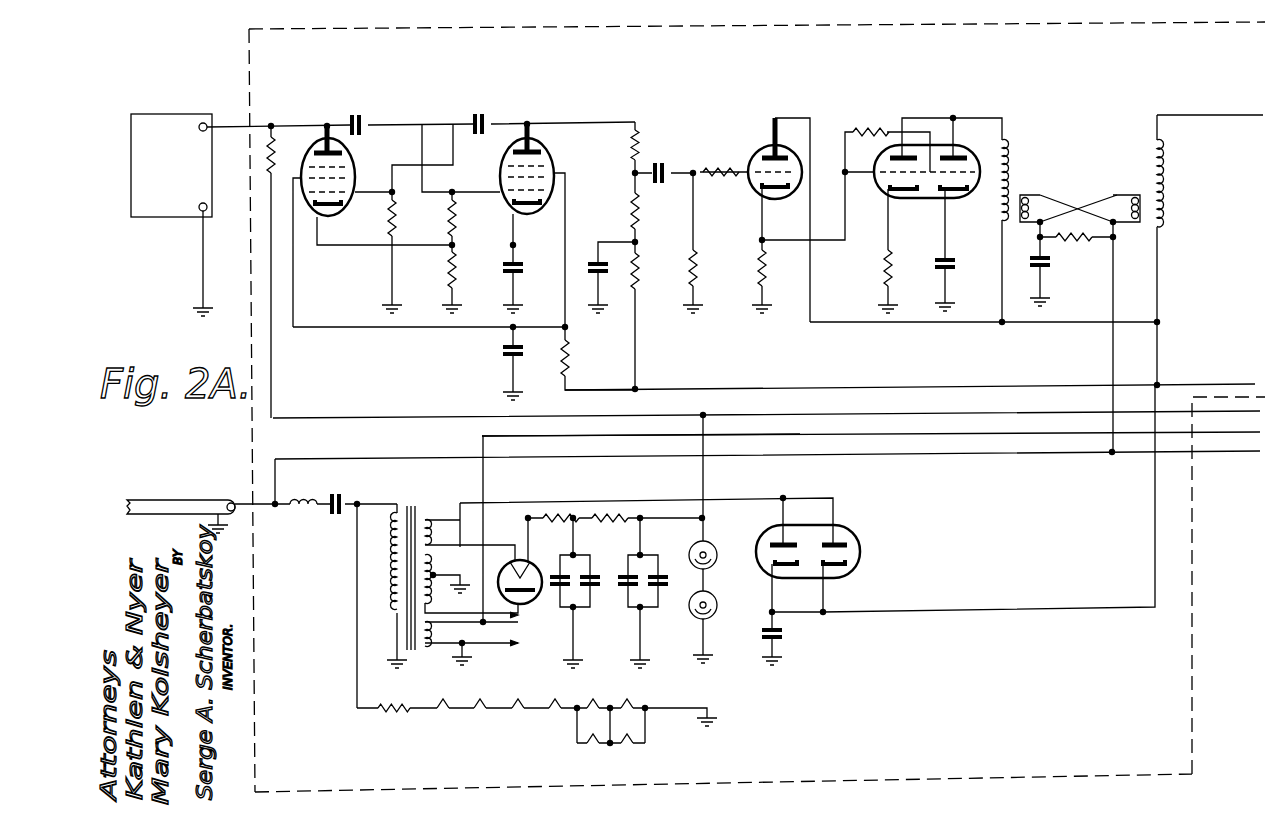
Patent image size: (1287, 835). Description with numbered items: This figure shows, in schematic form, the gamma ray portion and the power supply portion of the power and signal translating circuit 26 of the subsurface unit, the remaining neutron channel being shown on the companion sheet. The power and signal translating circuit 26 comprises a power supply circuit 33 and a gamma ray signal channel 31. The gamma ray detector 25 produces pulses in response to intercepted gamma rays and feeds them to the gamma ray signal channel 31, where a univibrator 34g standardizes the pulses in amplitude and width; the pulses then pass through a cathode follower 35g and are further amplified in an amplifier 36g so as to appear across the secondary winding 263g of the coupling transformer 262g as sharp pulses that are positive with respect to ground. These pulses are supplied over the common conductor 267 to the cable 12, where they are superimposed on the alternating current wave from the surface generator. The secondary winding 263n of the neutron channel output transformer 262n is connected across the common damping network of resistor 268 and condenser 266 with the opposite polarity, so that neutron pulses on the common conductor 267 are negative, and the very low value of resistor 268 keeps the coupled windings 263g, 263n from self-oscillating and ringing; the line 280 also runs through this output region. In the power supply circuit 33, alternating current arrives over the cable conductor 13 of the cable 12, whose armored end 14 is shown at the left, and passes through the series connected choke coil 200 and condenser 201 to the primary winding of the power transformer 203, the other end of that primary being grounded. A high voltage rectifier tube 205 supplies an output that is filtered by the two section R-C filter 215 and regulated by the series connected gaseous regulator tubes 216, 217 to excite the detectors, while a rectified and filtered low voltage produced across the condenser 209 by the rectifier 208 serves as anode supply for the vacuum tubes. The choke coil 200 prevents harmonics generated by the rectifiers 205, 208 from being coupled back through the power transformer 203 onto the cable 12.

The cable 12 is at (164, 494).
The cable conductor 13 is at (232, 498).
The cable end 14 is at (124, 499).
The gamma ray detector 25 is at (168, 213).
The power and signal translating circuit 26 is at (736, 407).
The gamma ray signal channel 31 is at (1040, 76).
The power supply circuit 33 is at (695, 565).
The univibrator 34g is at (565, 110).
The cathode follower 35g is at (830, 109).
The amplifier 36g is at (1020, 109).
The choke coil 200 is at (310, 487).
The condenser 201 is at (332, 511).
The power transformer 203 is at (413, 503).
The high voltage rectifier tube 205 is at (555, 550).
The rectifier 208 is at (858, 534).
The condenser 209 is at (788, 636).
The two section R-C filter 215 is at (624, 551).
The gaseous regulator tube 216 is at (714, 544).
The gaseous regulator tube 217 is at (716, 596).
The coupling transformer 262g is at (998, 225).
The neutron channel output transformer 262n is at (1183, 230).
The secondary winding 263g is at (1027, 195).
The secondary winding 263n is at (1134, 194).
The line coupling condenser 266 is at (1052, 274).
The common conductor 267 is at (1112, 341).
The damping resistor 268 is at (1080, 240).
The conductor 280 is at (1055, 429).